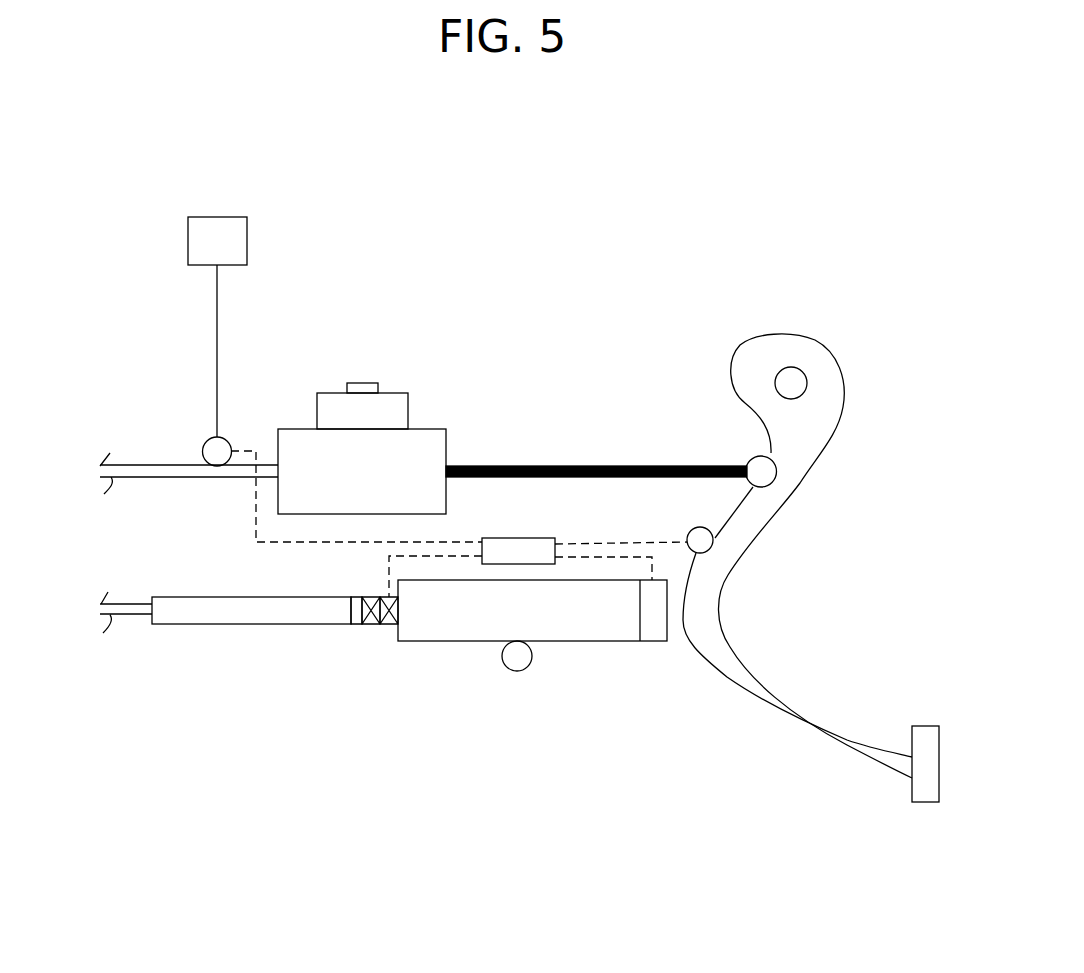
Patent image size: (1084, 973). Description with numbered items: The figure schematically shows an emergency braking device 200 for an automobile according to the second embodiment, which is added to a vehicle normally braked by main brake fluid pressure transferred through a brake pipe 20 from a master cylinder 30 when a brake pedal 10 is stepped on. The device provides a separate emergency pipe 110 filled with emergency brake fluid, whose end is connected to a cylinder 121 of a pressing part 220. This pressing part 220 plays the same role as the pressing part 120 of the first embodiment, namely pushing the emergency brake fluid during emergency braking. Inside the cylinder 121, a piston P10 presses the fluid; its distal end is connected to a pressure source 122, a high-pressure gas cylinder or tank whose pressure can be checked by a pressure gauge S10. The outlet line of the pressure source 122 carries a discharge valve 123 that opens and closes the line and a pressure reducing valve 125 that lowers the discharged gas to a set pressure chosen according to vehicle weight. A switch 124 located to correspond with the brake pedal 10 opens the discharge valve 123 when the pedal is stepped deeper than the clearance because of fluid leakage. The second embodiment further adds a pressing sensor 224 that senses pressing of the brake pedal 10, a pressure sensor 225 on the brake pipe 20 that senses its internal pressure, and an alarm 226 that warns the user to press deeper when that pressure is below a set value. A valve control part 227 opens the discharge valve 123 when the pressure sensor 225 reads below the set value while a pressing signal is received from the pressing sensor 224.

The brake pedal 10 is at (927, 802).
The brake pipe 20 is at (157, 470).
The master cylinder 30 is at (397, 408).
The emergency pipe 110 is at (128, 613).
The pressing part 120 is at (176, 637).
The cylinder 121 is at (248, 608).
The pressure source 122 is at (600, 617).
The discharge valve 123 is at (385, 625).
The switch 124 is at (655, 618).
The pressure reducing valve 125 is at (371, 625).
The emergency braking device 200 is at (628, 292).
The pressing part 220 is at (611, 471).
The pressing sensor 224 is at (611, 504).
The pressure sensor 225 is at (218, 450).
The alarm 226 is at (232, 242).
The valve control part 227 is at (512, 538).
The piston P10 is at (356, 620).
The pressure gauge S10 is at (517, 655).